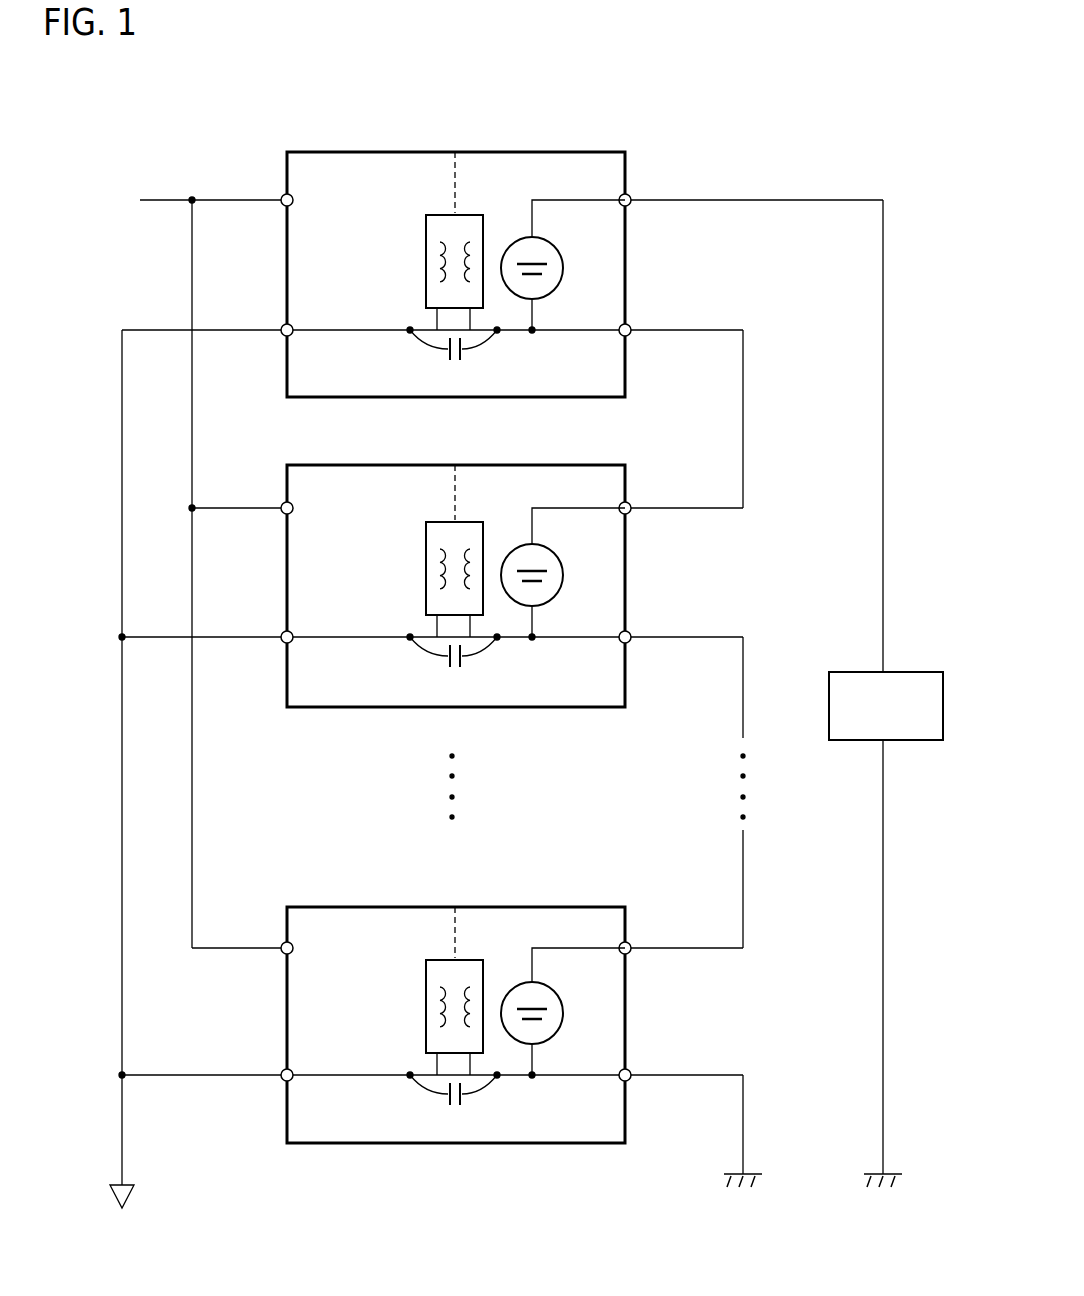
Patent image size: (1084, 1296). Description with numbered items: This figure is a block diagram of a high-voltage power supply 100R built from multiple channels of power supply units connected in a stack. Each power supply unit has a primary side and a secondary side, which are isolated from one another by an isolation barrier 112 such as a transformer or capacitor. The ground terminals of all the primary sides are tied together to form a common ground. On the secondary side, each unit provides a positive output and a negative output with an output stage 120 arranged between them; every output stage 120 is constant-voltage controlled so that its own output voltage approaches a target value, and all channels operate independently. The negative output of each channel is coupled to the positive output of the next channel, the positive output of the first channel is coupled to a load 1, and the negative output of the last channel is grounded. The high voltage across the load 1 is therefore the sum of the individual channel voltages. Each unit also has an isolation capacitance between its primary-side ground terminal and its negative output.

The high-voltage power supply 100R is at (913, 88).
The isolation barrier 112 is at (426, 256).
The output stage 120 is at (557, 246).
The load 1 is at (908, 672).